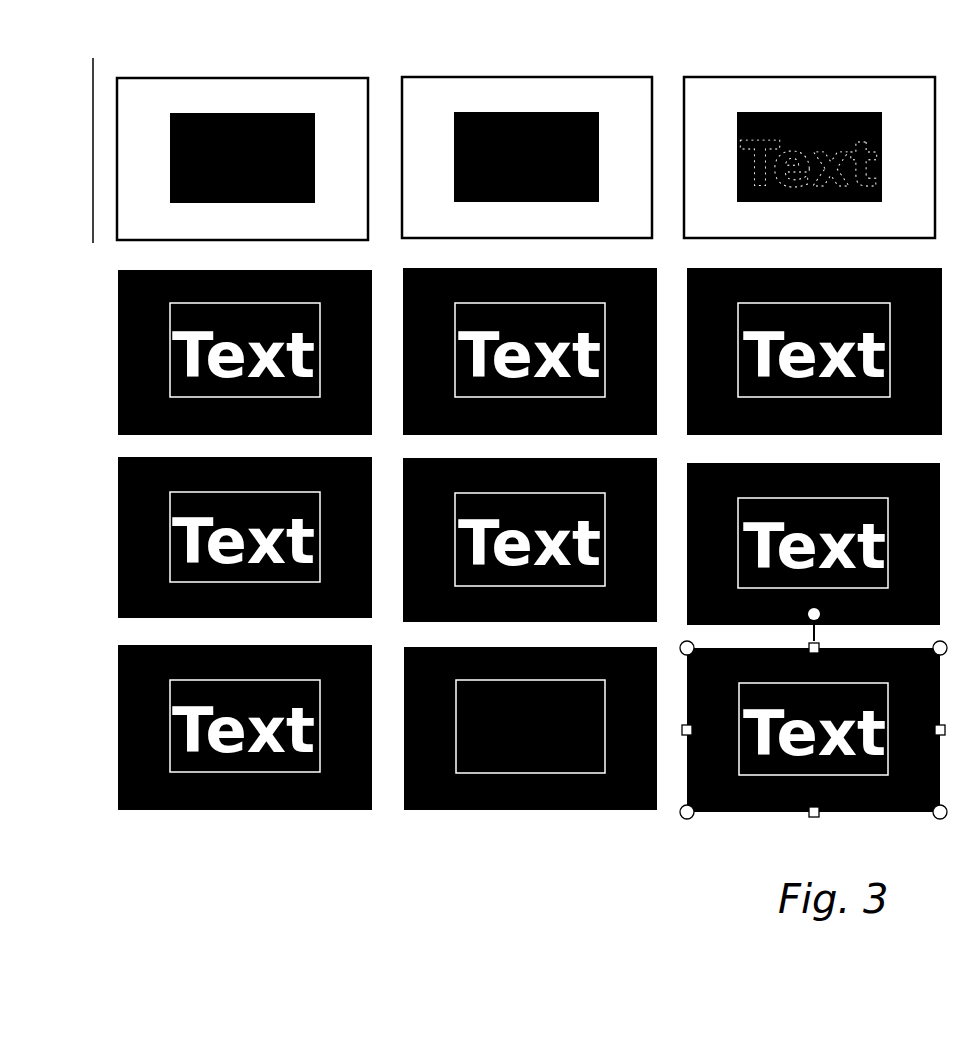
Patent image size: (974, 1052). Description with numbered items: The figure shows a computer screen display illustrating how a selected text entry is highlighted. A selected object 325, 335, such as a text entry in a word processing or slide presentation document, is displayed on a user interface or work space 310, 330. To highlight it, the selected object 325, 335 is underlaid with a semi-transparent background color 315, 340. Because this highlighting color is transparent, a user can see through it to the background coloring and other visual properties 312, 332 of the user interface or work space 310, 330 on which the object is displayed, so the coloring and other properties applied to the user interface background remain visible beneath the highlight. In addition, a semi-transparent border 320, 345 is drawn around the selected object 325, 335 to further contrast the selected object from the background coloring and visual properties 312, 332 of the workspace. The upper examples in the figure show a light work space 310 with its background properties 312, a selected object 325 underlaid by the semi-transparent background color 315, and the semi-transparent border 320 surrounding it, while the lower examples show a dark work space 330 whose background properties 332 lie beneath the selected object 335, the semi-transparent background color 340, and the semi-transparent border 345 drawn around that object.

The user interface or work space 310 is at (197, 78).
The background coloring and visual properties 312 is at (330, 103).
The semi-transparent background color 315 is at (205, 187).
The semi-transparent border 320 is at (243, 113).
The selected object 325 is at (173, 155).
The user interface or work space 330 is at (445, 802).
The background coloring and visual properties 332 is at (420, 763).
The selected object 335 is at (477, 753).
The semi-transparent background color 340 is at (588, 763).
The semi-transparent border 345 is at (567, 772).